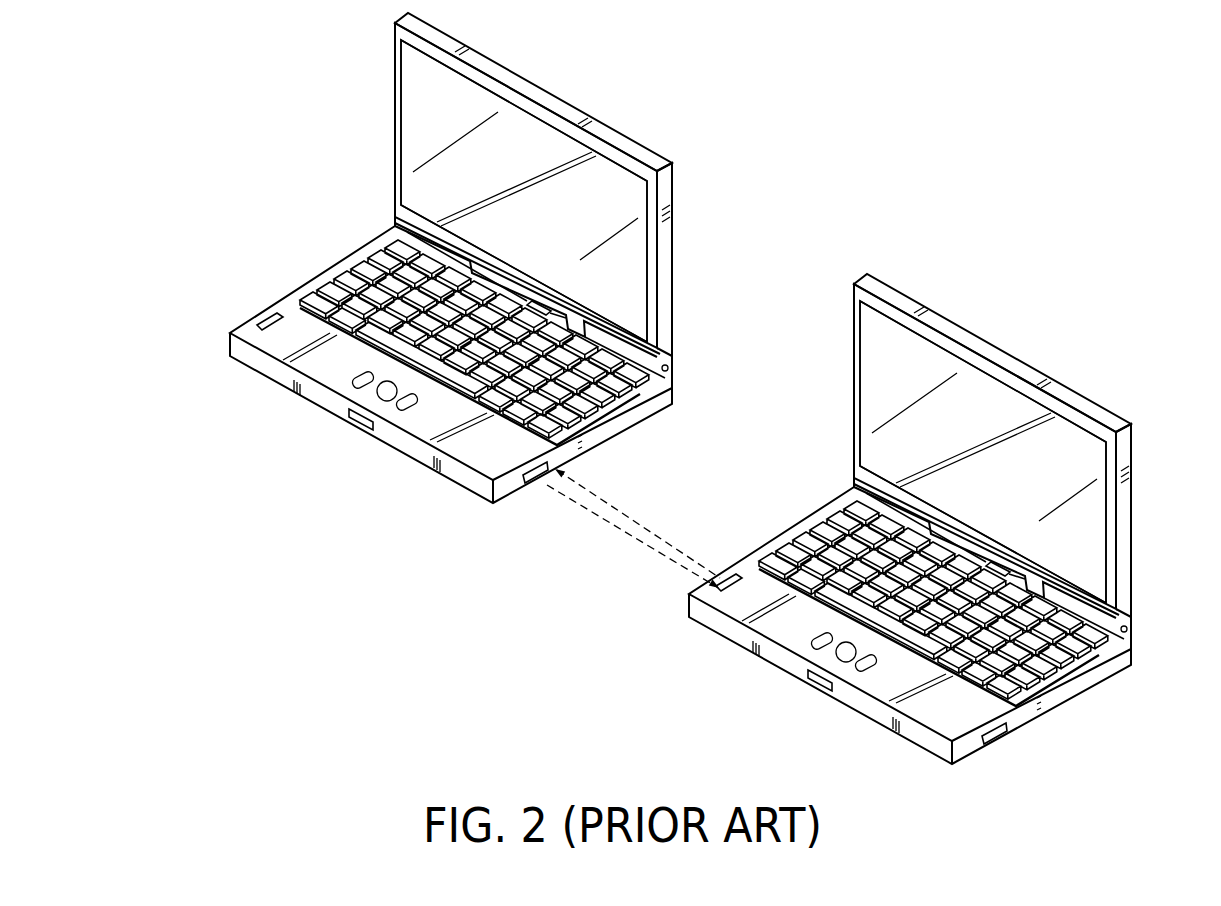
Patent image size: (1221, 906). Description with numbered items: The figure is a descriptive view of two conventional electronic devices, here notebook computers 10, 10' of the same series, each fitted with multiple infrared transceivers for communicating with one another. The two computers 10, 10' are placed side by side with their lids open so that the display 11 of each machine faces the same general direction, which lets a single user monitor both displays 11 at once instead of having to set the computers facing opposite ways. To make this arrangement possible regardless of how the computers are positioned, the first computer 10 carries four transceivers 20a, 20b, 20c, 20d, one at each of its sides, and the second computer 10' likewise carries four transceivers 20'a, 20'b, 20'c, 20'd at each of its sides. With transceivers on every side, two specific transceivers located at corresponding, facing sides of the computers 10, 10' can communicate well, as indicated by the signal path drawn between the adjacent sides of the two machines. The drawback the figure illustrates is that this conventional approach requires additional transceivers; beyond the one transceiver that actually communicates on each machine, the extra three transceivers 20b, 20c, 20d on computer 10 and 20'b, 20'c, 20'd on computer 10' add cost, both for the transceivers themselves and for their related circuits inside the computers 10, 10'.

The computer 10 is at (451, 301).
The computer 10' is at (953, 560).
The display 11 is at (415, 108).
The transceiver 20a is at (268, 312).
The transceiver 20b is at (360, 423).
The transceiver 20c is at (530, 487).
The transceiver 20d is at (548, 307).
The transceiver 20'a is at (736, 520).
The transceiver 20'b is at (787, 733).
The transceiver 20'c is at (1007, 784).
The transceiver 20'd is at (1101, 555).